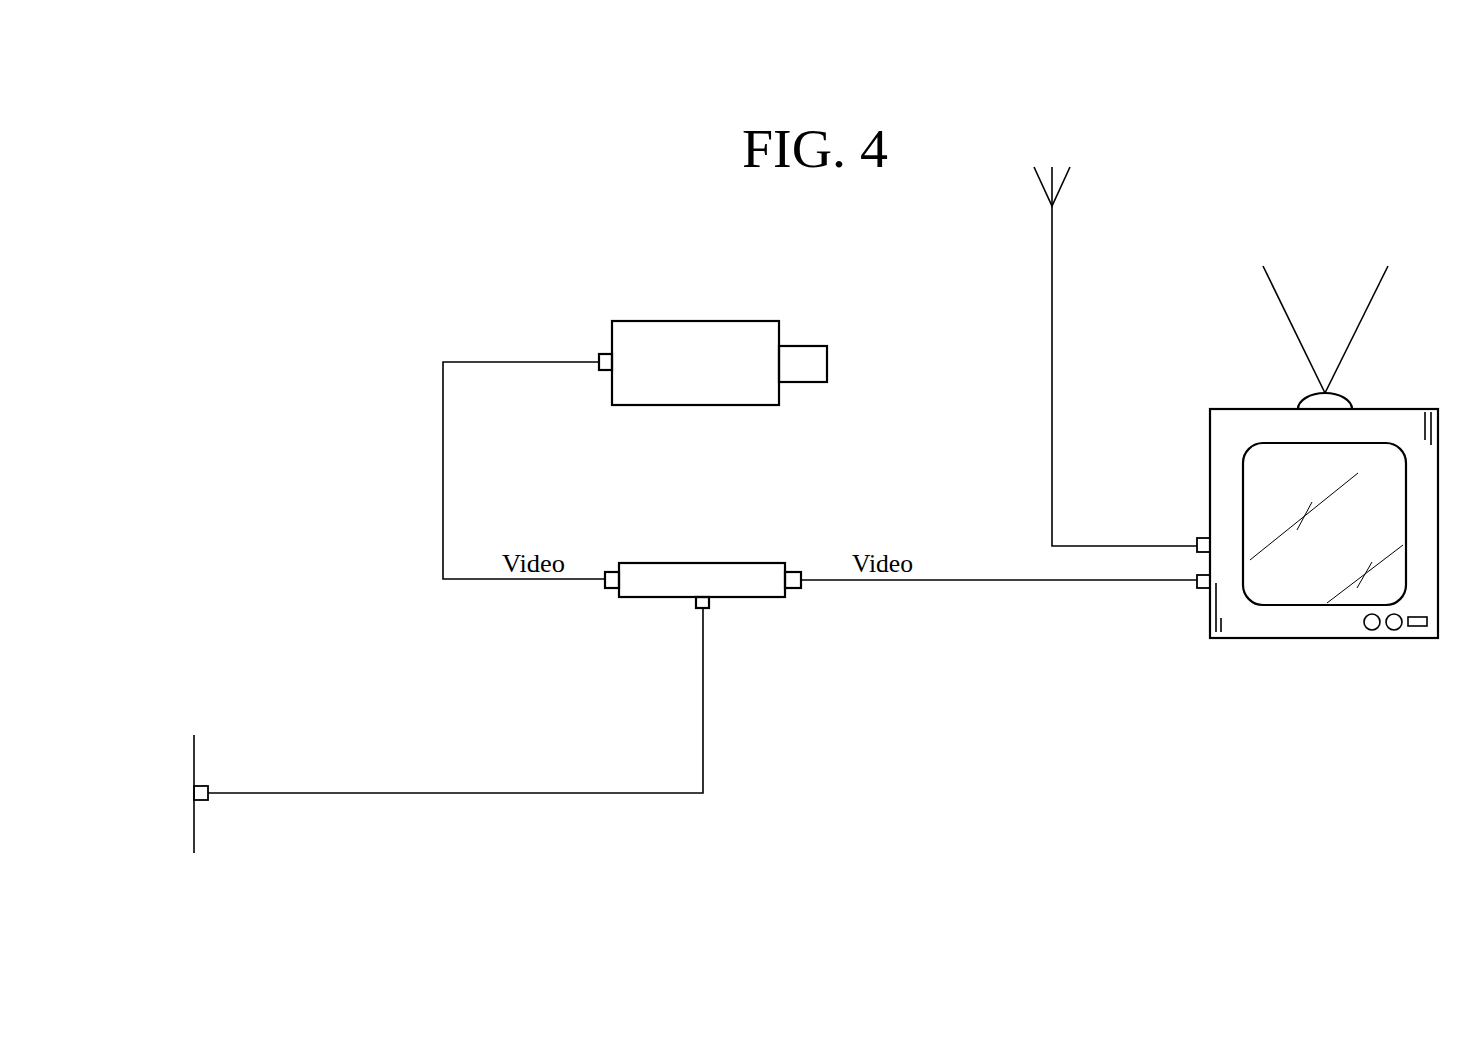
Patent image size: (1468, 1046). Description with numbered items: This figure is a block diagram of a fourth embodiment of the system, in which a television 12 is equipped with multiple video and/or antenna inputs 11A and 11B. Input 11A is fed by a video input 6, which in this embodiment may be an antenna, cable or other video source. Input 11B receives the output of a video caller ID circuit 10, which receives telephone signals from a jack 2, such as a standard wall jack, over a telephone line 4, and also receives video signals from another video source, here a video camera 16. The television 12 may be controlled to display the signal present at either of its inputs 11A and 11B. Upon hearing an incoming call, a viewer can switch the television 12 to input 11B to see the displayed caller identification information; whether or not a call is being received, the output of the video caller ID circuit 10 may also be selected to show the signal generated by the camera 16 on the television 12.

The jack 2 is at (208, 800).
The telephone line 4 is at (568, 795).
The video input 6 is at (1052, 210).
The video caller ID circuit 10 is at (657, 597).
The input 11A is at (1197, 540).
The input 11B is at (1197, 588).
The television 12 is at (1209, 423).
The video camera 16 is at (779, 405).